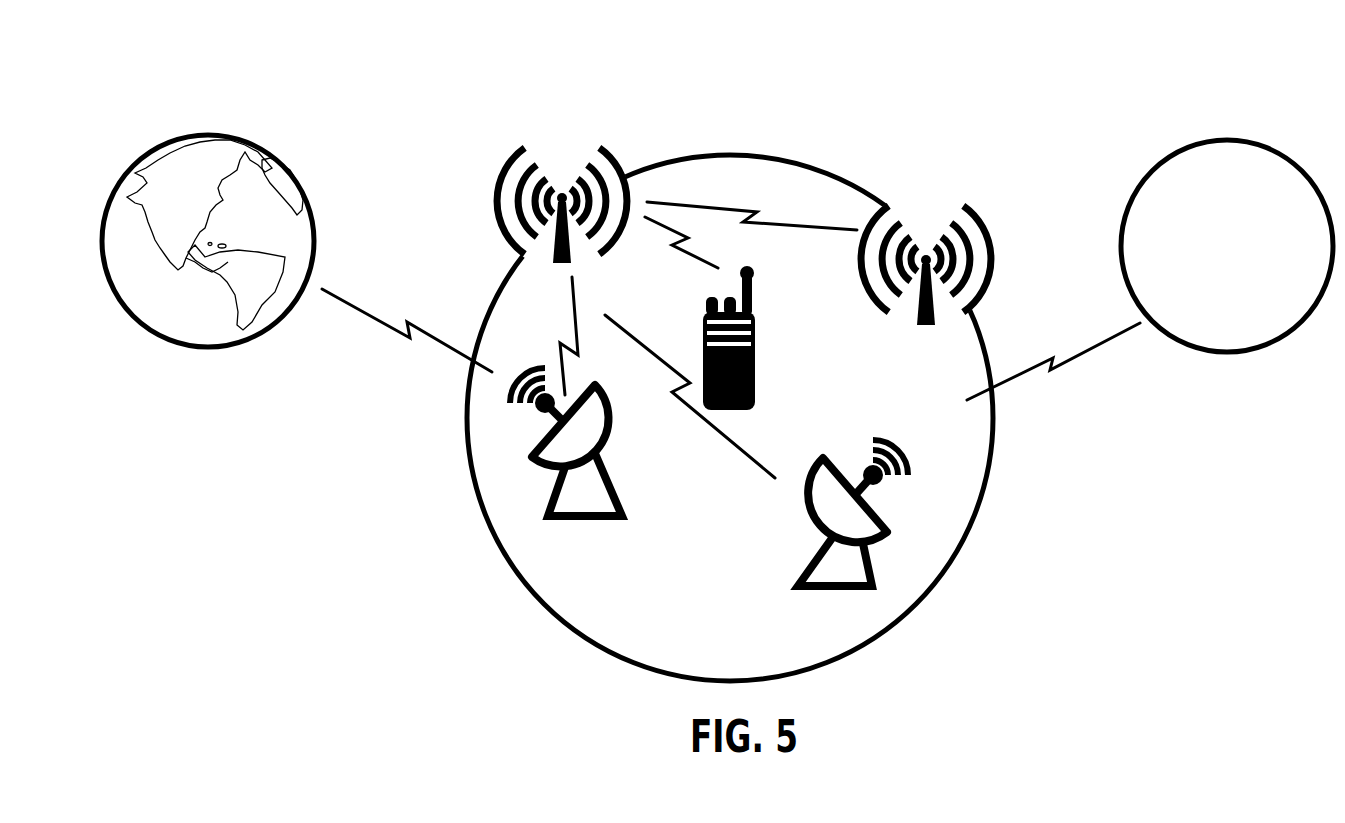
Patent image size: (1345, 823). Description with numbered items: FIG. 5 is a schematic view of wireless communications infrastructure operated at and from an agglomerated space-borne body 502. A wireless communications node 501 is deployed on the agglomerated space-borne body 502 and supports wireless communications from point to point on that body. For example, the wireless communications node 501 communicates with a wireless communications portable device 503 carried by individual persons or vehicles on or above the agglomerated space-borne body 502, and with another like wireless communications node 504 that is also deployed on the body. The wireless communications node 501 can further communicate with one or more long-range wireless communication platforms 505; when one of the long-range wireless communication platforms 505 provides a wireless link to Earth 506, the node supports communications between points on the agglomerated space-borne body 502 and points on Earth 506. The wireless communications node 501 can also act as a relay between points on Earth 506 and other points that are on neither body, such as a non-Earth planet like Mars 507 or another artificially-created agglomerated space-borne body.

The wireless communications node 501 is at (557, 256).
The agglomerated space-borne body 502 is at (482, 512).
The wireless communications portable device 503 is at (757, 373).
The wireless communications node 504 is at (993, 248).
The long-range wireless communication platform 505 is at (607, 450).
The Earth 506 is at (226, 349).
The Mars 507 is at (1205, 354).